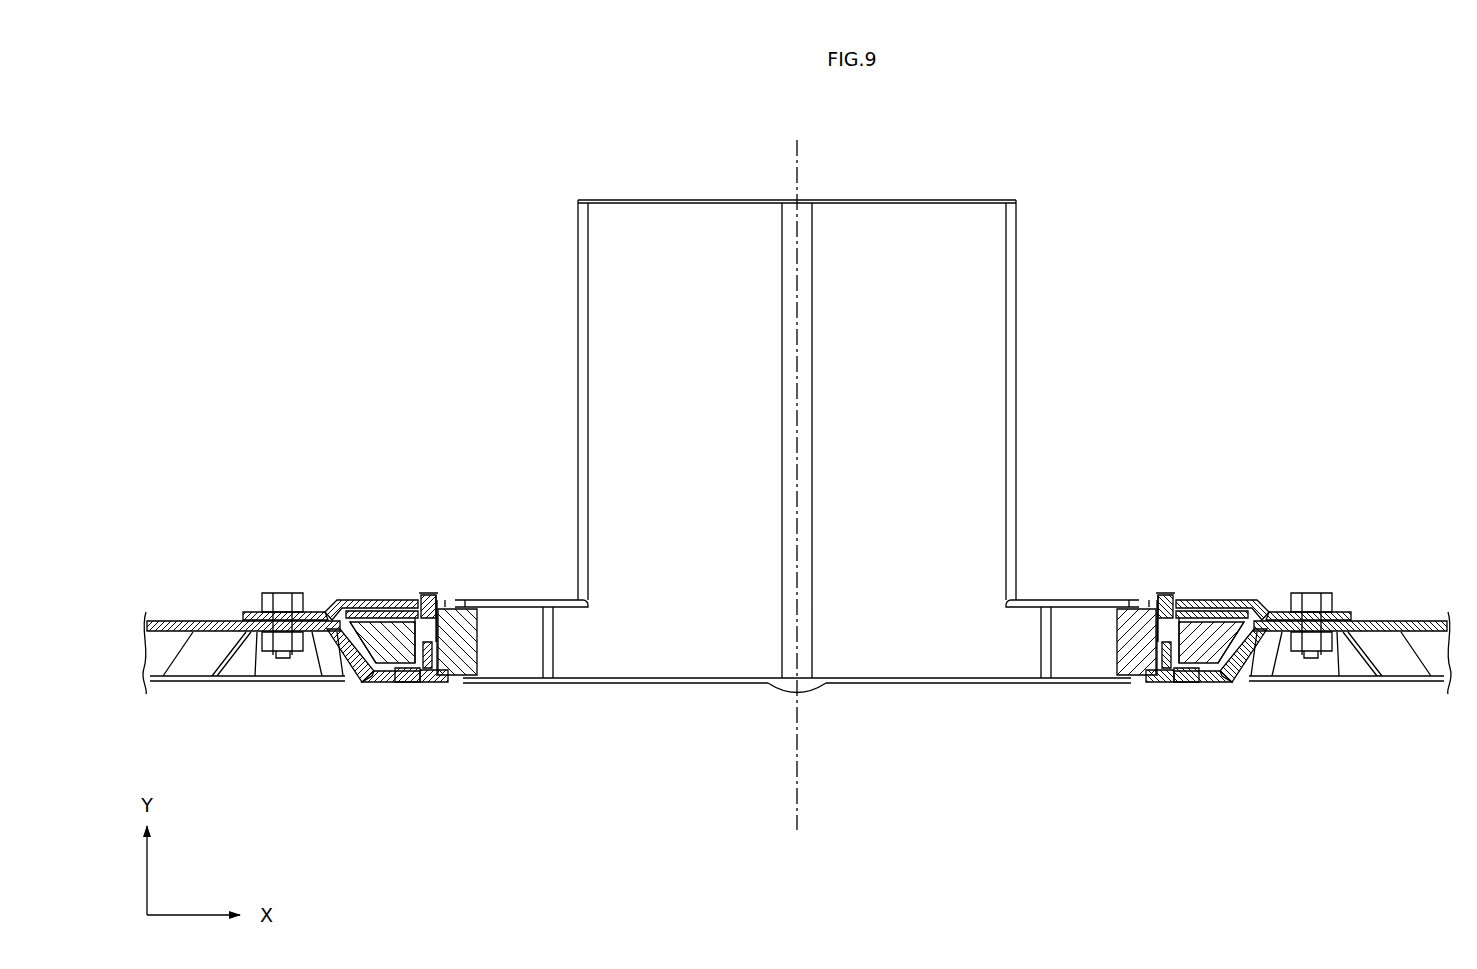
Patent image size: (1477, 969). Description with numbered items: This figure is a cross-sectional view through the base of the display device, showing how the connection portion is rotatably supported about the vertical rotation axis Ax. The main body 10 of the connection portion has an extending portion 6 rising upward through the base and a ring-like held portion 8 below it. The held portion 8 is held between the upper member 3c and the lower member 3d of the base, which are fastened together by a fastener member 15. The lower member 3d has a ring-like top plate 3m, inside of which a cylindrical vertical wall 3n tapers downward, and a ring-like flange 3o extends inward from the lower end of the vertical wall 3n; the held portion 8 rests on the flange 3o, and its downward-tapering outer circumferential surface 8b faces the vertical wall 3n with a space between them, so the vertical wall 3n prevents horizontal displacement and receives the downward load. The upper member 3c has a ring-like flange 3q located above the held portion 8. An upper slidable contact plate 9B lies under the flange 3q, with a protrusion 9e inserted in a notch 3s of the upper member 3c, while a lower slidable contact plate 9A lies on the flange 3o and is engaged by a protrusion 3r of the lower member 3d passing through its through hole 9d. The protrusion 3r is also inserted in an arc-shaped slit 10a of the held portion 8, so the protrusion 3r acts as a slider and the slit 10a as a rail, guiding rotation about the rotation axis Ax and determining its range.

The main body 10 is at (576, 251).
The extending portion 6 is at (985, 303).
The rotation axis Ax is at (806, 798).
The top plate 3m is at (167, 621).
The lower member 3d is at (156, 640).
The upper member 3c is at (242, 602).
The upper slidable contact plate 9B is at (355, 598).
The flange 3q is at (342, 600).
The fastener member 15 is at (267, 591).
The vertical wall 3n is at (335, 642).
The flange 3o is at (382, 676).
The held portion 8 is at (375, 640).
The outer circumferential surface 8b is at (343, 652).
The notch 3s is at (428, 596).
The protrusion 9e is at (434, 597).
The slit 10a is at (428, 632).
The protrusion 3r is at (447, 642).
The through hole 9d is at (430, 669).
The lower slidable contact plate 9A is at (410, 686).